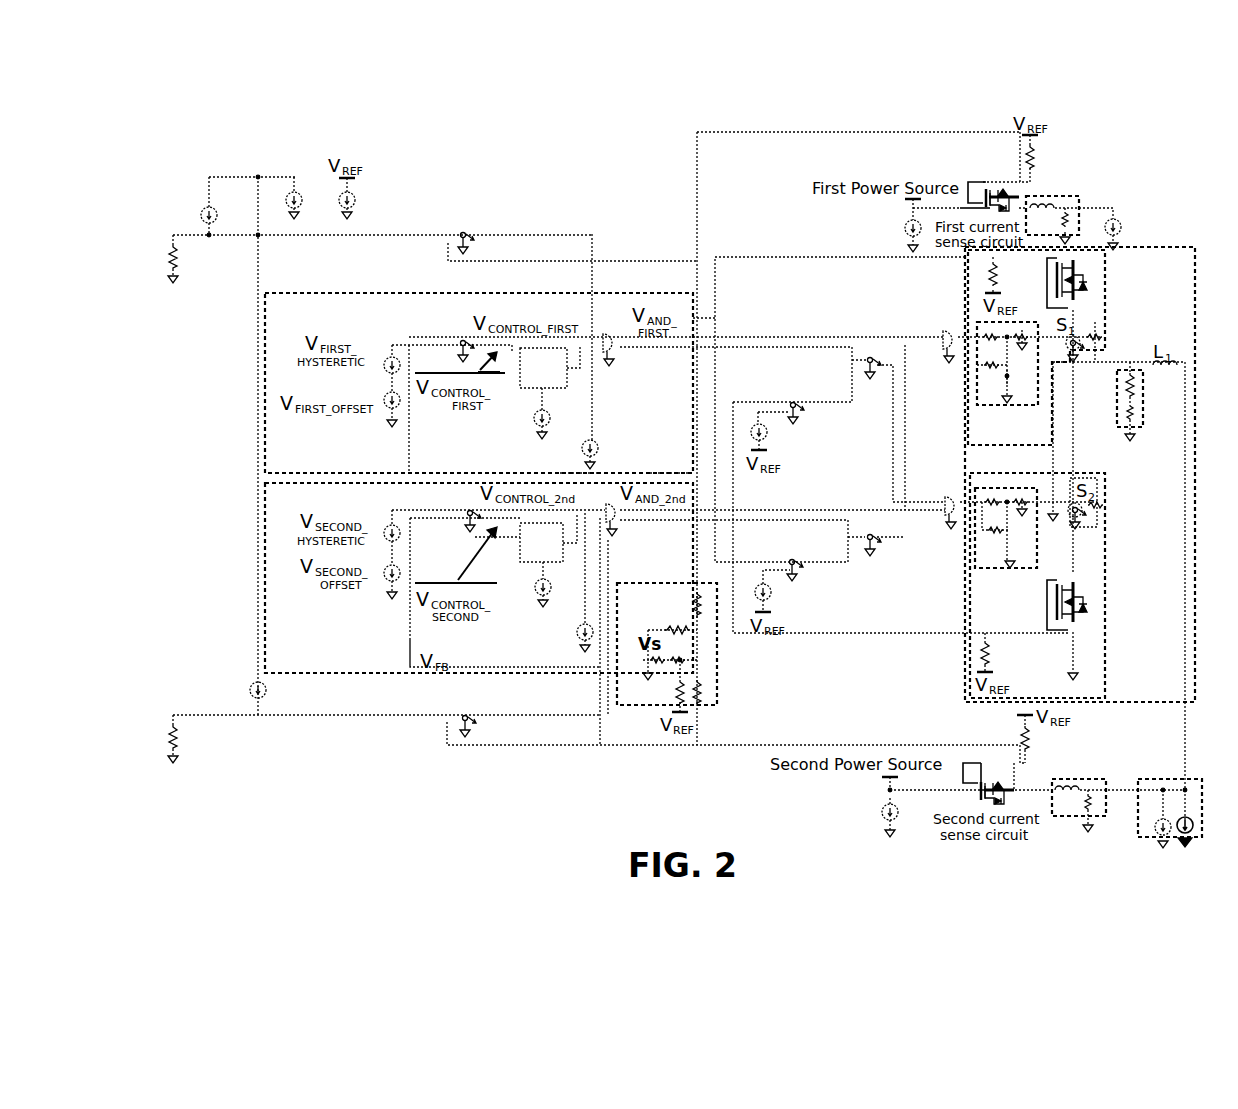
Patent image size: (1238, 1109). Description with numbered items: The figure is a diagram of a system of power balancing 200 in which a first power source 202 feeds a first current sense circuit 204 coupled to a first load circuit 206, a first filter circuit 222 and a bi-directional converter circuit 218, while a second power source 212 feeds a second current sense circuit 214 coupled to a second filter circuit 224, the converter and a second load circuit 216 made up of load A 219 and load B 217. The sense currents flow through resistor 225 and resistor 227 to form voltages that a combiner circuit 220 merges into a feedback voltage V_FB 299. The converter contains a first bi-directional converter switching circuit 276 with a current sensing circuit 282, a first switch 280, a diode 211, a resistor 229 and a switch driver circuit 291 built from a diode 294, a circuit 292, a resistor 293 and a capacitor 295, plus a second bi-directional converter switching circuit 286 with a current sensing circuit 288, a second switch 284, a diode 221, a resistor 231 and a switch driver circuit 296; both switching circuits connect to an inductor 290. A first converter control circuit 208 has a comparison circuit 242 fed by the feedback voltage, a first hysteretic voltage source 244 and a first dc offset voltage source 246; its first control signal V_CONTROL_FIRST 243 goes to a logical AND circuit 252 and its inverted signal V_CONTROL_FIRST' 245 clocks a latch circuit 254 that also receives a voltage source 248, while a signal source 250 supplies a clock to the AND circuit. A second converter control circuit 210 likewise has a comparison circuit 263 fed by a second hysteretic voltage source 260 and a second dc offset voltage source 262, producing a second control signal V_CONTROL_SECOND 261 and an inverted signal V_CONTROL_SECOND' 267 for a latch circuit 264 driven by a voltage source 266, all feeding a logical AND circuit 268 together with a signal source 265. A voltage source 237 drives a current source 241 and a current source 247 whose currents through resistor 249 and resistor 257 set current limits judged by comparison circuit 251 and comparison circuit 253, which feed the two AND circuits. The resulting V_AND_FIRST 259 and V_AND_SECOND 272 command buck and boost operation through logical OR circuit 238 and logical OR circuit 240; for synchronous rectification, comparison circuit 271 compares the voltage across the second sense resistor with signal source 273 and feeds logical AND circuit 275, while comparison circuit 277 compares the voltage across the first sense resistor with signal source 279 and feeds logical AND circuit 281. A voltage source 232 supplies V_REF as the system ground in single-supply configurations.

The system of power balancing 200 is at (232, 150).
The first power source 202 is at (905, 230).
The first current sense circuit 204 is at (975, 182).
The first load circuit 206 is at (1118, 220).
The first converter control circuit 208 is at (386, 312).
The second converter control circuit 210 is at (275, 508).
The diode 211 is at (1100, 340).
The second power source 212 is at (882, 808).
The second current sense circuit 214 is at (1010, 778).
The second load circuit 216 is at (1172, 779).
The load B 217 is at (1157, 831).
The bi-directional converter circuit 218 is at (1162, 247).
The load A 219 is at (1189, 838).
The combiner circuit 220 is at (718, 672).
The diode 221 is at (1097, 508).
The first filter circuit 222 is at (1062, 195).
The second filter circuit 224 is at (1082, 779).
The resistor 225 is at (1035, 160).
The resistor 227 is at (1020, 738).
The resistor 229 is at (985, 276).
The resistor 231 is at (980, 642).
The voltage source 232 is at (352, 196).
The voltage source 237 is at (296, 192).
The logical OR circuit 238 is at (946, 338).
The logical OR circuit 240 is at (959, 528).
The current source 241 is at (209, 207).
The comparison circuit 242 is at (462, 338).
The first control signal V_CONTROL_FIRST 243 is at (537, 317).
The first hysteretic voltage source 244 is at (386, 358).
The inverted first control signal V_CONTROL_FIRST' 245 is at (449, 432).
The first dc offset voltage source 246 is at (386, 398).
The current source 247 is at (252, 684).
The voltage source 248 is at (537, 423).
The resistor 249 is at (178, 255).
The signal source 250 is at (596, 455).
The comparison circuit 251 is at (470, 238).
The logical AND circuit 252 is at (608, 335).
The comparison circuit 253 is at (463, 718).
The latch circuit 254 is at (522, 390).
The resistor 257 is at (176, 738).
The V_AND_FIRST signal 259 is at (697, 318).
The second hysteretic voltage source 260 is at (386, 528).
The second control signal V_CONTROL_SECOND 261 is at (562, 480).
The second dc offset voltage source 262 is at (386, 568).
The comparison circuit 263 is at (465, 520).
The latch circuit 264 is at (527, 558).
The signal source 265 is at (578, 636).
The voltage source 266 is at (537, 592).
The inverted second control signal V_CONTROL_SECOND' 267 is at (462, 622).
The logical AND circuit 268 is at (620, 522).
The comparison circuit 271 is at (800, 405).
The V_AND_SECOND signal 272 is at (662, 486).
The signal source 273 is at (770, 436).
The logical AND circuit 275 is at (865, 355).
The first bi-directional converter switching circuit 276 is at (1100, 292).
The comparison circuit 277 is at (800, 568).
The signal source 279 is at (772, 596).
The switch S1 280 is at (1080, 338).
The logical AND circuit 281 is at (880, 545).
The current sensing circuit 282 is at (1085, 278).
The switch S2 284 is at (1082, 518).
The second bi-directional converter switching circuit 286 is at (1105, 473).
The current sensing circuit 288 is at (1085, 614).
The inductor L1 290 is at (1167, 362).
The switch driver circuit 291 is at (1023, 328).
The circuit 292 is at (1025, 348).
The resistor 293 is at (985, 332).
The diode 294 is at (990, 367).
The capacitor 295 is at (1002, 378).
The switch driver circuit 296 is at (1050, 568).
The feedback voltage V_FB 299 is at (408, 662).